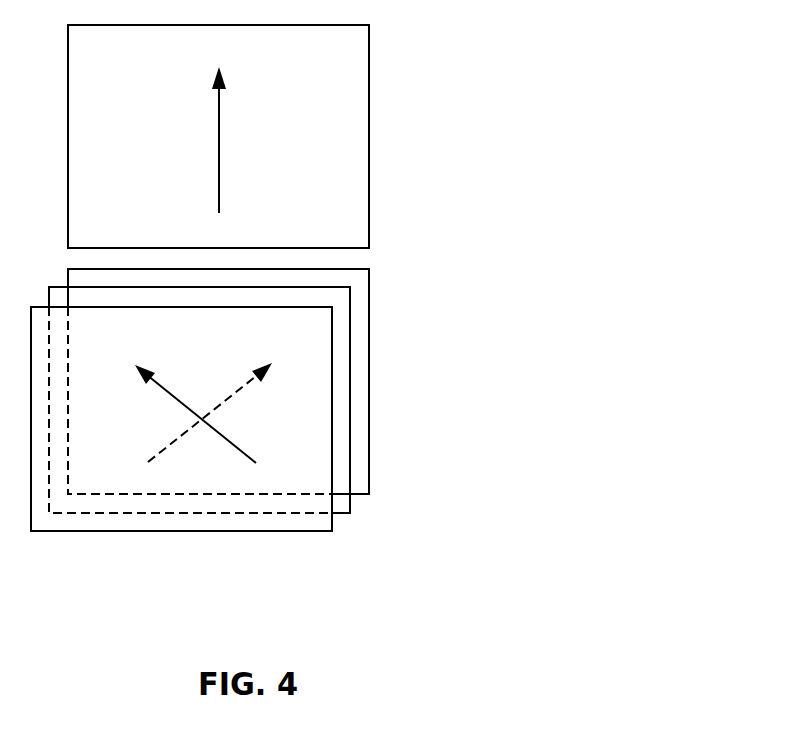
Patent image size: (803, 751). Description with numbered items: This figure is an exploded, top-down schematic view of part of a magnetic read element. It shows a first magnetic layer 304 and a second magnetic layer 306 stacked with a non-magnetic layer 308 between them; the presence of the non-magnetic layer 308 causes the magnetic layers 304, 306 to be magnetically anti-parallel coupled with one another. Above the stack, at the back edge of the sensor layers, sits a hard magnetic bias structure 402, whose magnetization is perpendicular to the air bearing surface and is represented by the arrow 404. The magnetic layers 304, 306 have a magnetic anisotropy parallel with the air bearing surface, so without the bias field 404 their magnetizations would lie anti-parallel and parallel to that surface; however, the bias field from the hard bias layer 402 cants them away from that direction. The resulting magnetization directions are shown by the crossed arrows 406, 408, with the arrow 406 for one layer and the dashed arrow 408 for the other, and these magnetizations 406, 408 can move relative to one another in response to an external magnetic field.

The hard magnetic bias structure 402 is at (370, 100).
The magnetization arrow 404 is at (220, 156).
The first magnetic layer 304 is at (370, 462).
The second magnetic layer 306 is at (333, 373).
The non-magnetic layer 308 is at (351, 418).
The magnetization direction arrow 406 is at (171, 397).
The magnetization direction arrow 408 is at (235, 390).